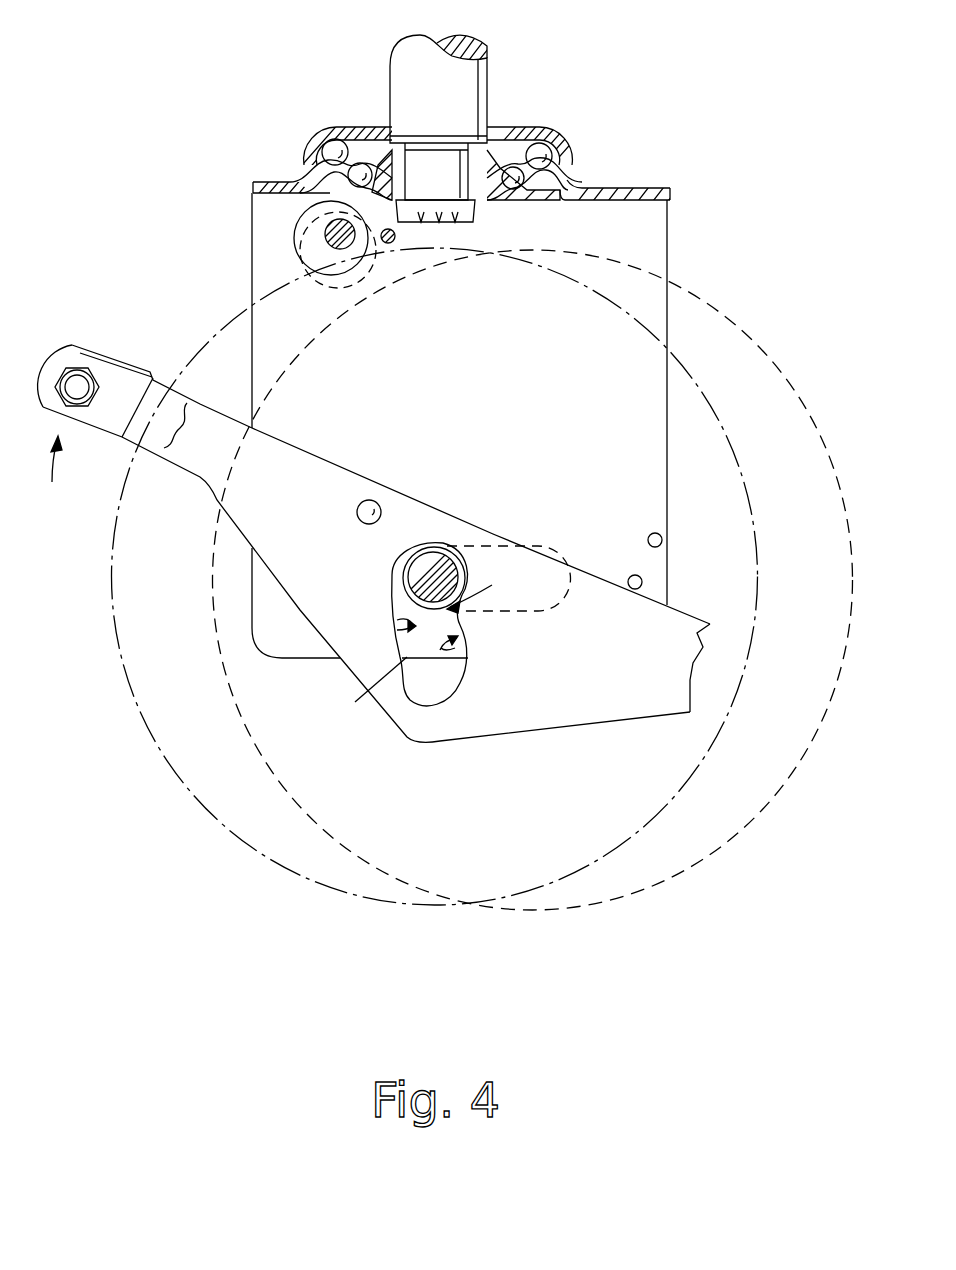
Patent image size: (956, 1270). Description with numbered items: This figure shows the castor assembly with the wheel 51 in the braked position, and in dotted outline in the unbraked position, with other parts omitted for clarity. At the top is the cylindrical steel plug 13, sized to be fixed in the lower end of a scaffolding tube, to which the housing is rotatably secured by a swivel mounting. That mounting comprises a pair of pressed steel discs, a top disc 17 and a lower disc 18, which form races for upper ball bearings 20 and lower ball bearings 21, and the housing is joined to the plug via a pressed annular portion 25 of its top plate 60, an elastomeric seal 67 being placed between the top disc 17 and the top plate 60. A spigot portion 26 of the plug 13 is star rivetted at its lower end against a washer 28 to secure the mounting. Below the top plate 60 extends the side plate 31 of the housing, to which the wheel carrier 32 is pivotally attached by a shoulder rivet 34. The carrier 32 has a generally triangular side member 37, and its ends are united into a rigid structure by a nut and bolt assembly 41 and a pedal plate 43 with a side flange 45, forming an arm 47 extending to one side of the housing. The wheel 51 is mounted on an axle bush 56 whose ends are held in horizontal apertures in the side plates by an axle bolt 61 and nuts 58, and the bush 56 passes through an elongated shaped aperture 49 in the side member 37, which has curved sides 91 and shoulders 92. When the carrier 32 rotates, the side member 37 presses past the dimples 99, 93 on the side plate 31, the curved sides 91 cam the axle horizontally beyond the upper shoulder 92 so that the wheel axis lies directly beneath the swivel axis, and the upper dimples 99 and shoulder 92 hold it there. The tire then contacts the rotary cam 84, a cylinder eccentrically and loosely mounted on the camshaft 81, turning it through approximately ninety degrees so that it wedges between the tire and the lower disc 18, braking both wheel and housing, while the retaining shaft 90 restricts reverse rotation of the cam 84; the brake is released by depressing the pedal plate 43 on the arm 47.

The cylindrical steel plug 13 is at (470, 87).
The top steel disc 17 is at (355, 138).
The lower steel disc 18 is at (328, 190).
The upper ball bearings 20 is at (536, 152).
The lower ball bearings 21 is at (527, 196).
The pressed annular portion 25 is at (352, 143).
The spigot portion 26 is at (440, 222).
The washer 28 is at (483, 195).
The side plate 31 is at (670, 262).
The wheel carrier 32 is at (551, 735).
The shoulder rivet 34 is at (369, 500).
The side member 37 is at (683, 664).
The nut and bolt assembly 41 is at (77, 396).
The pedal plate 43 is at (125, 362).
The side flange 45 is at (118, 421).
The left-hand arm 47 is at (52, 473).
The shaped aperture 49 is at (462, 656).
The wheel 51 is at (685, 473).
The axle bush 56 is at (430, 547).
The nut 58 is at (530, 613).
The top plate 60 is at (632, 192).
The axle bolt 61 is at (442, 574).
The elastomeric seal 67 is at (571, 167).
The camshaft 81 is at (338, 236).
The rotary cam 84 is at (296, 234).
The retaining shaft 90 is at (389, 244).
The curved sides 91 is at (397, 616).
The shoulders 92 is at (424, 643).
The dimples 93 is at (643, 582).
The upper dimples 99 is at (663, 540).